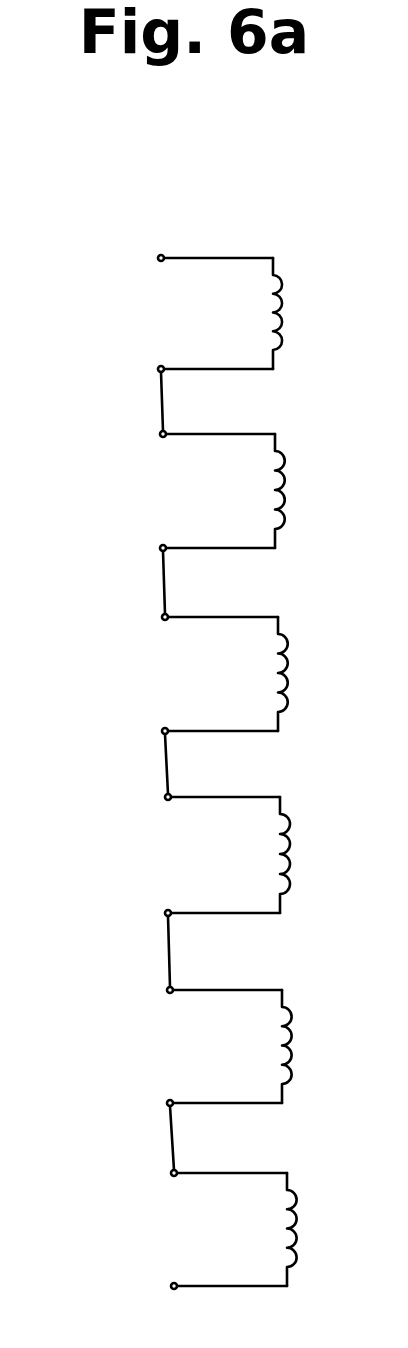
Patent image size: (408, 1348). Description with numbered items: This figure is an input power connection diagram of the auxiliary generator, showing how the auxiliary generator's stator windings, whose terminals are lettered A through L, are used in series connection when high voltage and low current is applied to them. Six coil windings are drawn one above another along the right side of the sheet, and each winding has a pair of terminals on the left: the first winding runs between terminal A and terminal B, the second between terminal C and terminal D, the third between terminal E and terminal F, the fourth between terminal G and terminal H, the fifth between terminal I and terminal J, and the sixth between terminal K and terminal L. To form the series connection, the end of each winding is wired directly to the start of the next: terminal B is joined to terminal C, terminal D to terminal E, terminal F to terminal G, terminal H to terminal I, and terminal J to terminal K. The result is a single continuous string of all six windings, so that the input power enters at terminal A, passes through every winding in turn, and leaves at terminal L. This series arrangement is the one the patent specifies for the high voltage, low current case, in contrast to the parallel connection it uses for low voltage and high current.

The stator winding terminal A is at (195, 258).
The stator winding terminal B is at (195, 369).
The stator winding terminal C is at (197, 434).
The stator winding terminal D is at (197, 548).
The stator winding terminal E is at (200, 617).
The stator winding terminal F is at (200, 731).
The stator winding terminal G is at (201, 797).
The stator winding terminal H is at (202, 913).
The stator winding terminal I is at (206, 990).
The stator winding terminal J is at (205, 1103).
The stator winding terminal K is at (209, 1173).
The stator winding terminal L is at (209, 1286).